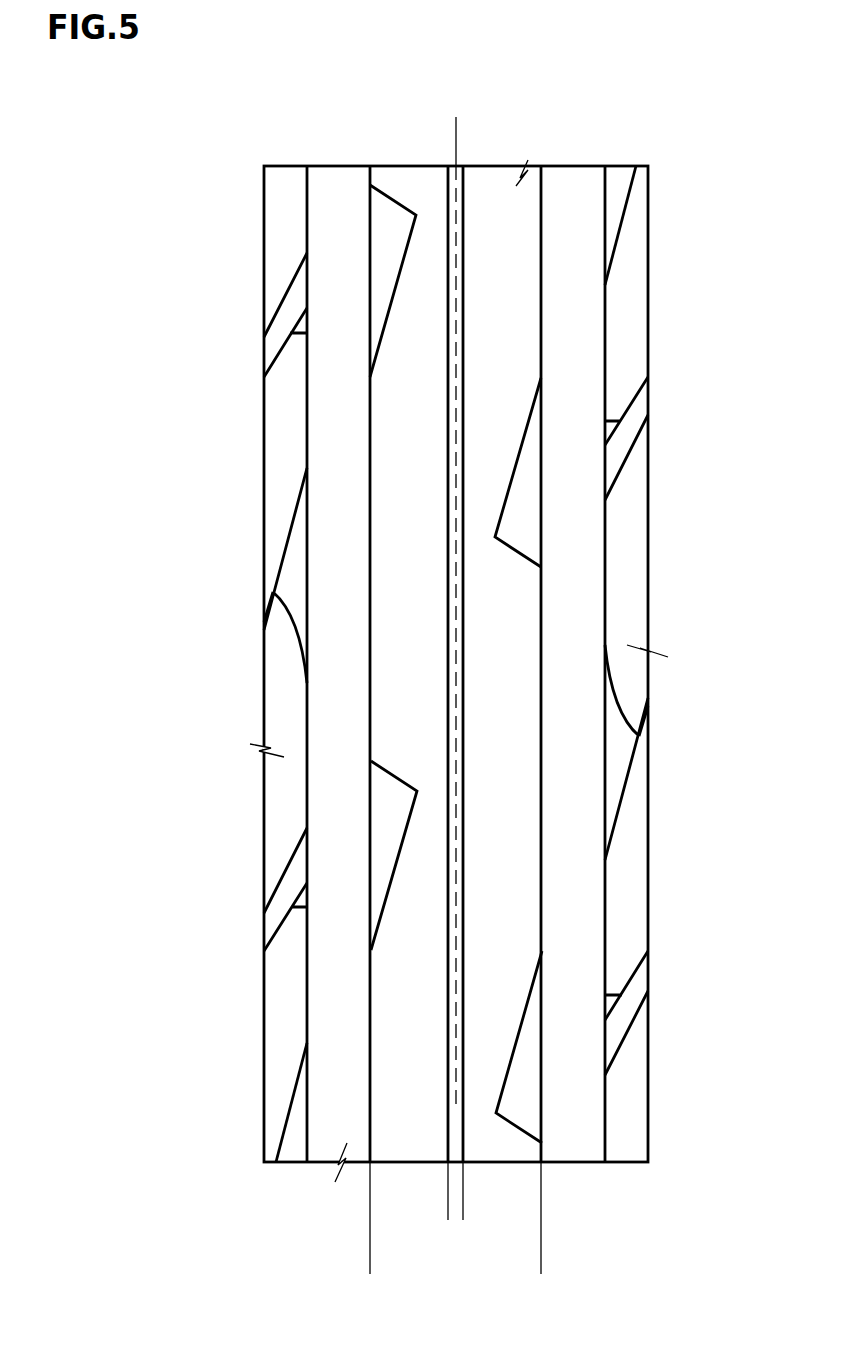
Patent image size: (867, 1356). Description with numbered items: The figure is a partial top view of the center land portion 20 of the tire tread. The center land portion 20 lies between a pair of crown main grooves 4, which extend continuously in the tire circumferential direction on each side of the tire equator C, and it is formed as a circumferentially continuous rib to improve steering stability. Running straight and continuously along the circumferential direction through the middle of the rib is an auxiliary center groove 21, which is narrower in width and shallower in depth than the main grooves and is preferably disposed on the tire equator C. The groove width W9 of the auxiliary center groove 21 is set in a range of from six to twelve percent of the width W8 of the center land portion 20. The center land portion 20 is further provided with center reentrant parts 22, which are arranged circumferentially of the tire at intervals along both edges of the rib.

The crown main groove 4 is at (343, 228).
The center land portion 20 is at (430, 248).
The auxiliary center groove 21 is at (460, 196).
The center reentrant parts 22 is at (388, 253).
The tire equator C is at (456, 597).
The width of center land portion W8 is at (541, 1268).
The groove width of auxiliary center groove W9 is at (413, 1217).